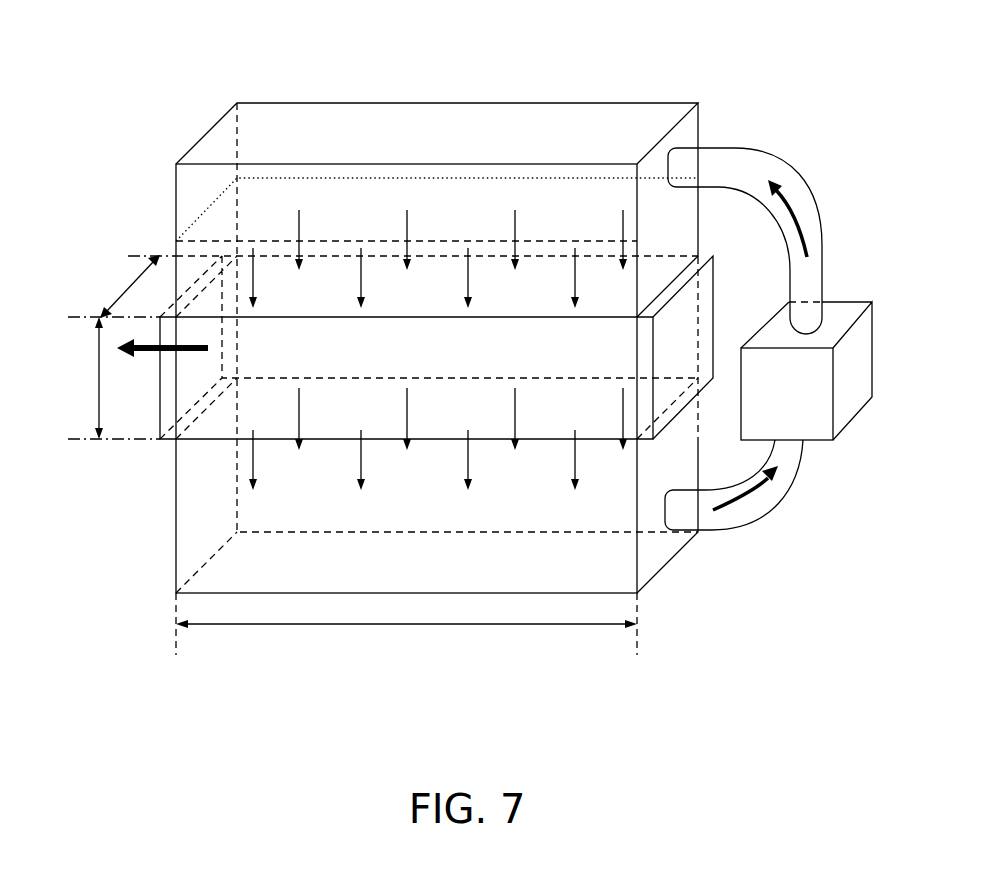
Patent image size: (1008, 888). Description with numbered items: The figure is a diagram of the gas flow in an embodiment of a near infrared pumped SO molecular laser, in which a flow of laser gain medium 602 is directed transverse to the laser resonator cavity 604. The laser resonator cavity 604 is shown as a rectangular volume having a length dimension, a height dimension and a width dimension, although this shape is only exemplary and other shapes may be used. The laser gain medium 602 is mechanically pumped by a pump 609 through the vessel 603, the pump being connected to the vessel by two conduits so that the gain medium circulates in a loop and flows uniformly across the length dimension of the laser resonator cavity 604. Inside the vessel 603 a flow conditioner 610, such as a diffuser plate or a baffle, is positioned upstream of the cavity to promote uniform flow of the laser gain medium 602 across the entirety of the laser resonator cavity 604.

The laser gain medium 602 is at (748, 495).
The vessel 603 is at (678, 670).
The laser resonator cavity 604 is at (270, 349).
The pump 609 is at (774, 415).
The flow conditioner 610 is at (268, 240).